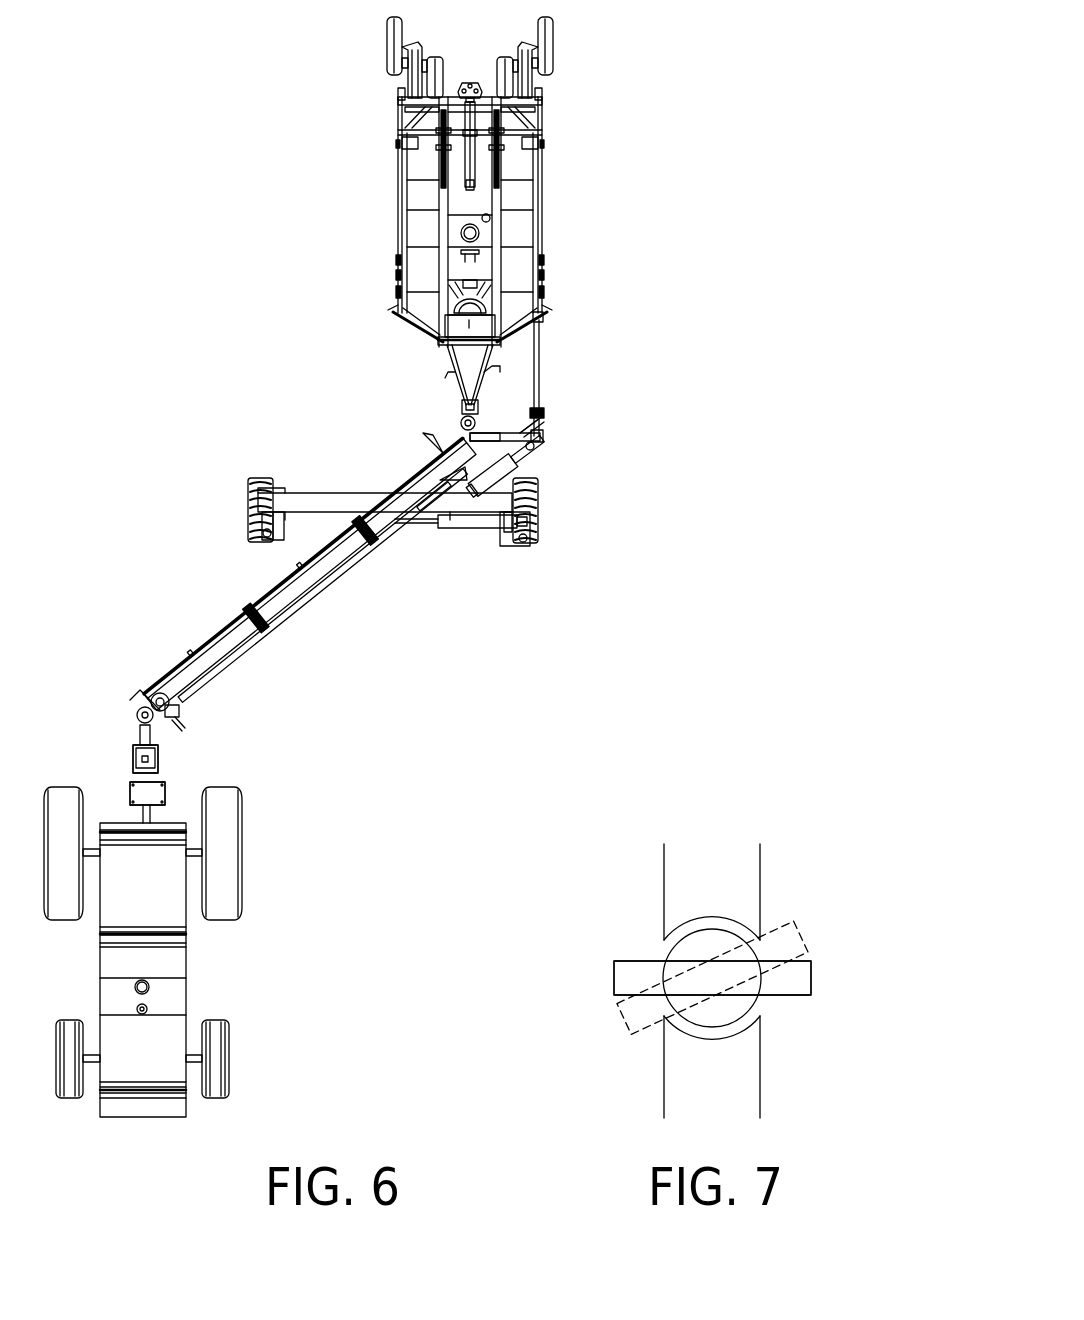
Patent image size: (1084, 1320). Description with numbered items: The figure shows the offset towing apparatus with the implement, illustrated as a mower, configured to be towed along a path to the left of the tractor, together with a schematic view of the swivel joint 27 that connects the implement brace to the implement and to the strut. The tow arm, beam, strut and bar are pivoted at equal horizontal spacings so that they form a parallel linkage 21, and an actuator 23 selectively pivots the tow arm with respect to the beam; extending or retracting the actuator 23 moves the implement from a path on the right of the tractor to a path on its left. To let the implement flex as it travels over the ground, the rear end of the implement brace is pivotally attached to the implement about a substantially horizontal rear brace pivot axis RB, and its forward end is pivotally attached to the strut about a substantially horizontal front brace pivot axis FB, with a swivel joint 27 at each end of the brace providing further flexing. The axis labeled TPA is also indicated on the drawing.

In FIG. 6, the rear brace pivot axis RB is at (545, 319).
In FIG. 7, the rear brace pivot axis RB is at (811, 977).
In FIG. 6, the front brace pivot axis FB is at (547, 414).
In FIG. 7, the front brace pivot axis FB is at (840, 977).
In FIG. 6, the swivel joint 27 is at (540, 414).
In FIG. 7, the swivel joint 27 is at (773, 916).
In FIG. 6, the parallel linkage 21 is at (512, 457).
In FIG. 6, the actuator 23 is at (470, 530).
In FIG. 6, the tractor pivot assembly TPA is at (150, 795).